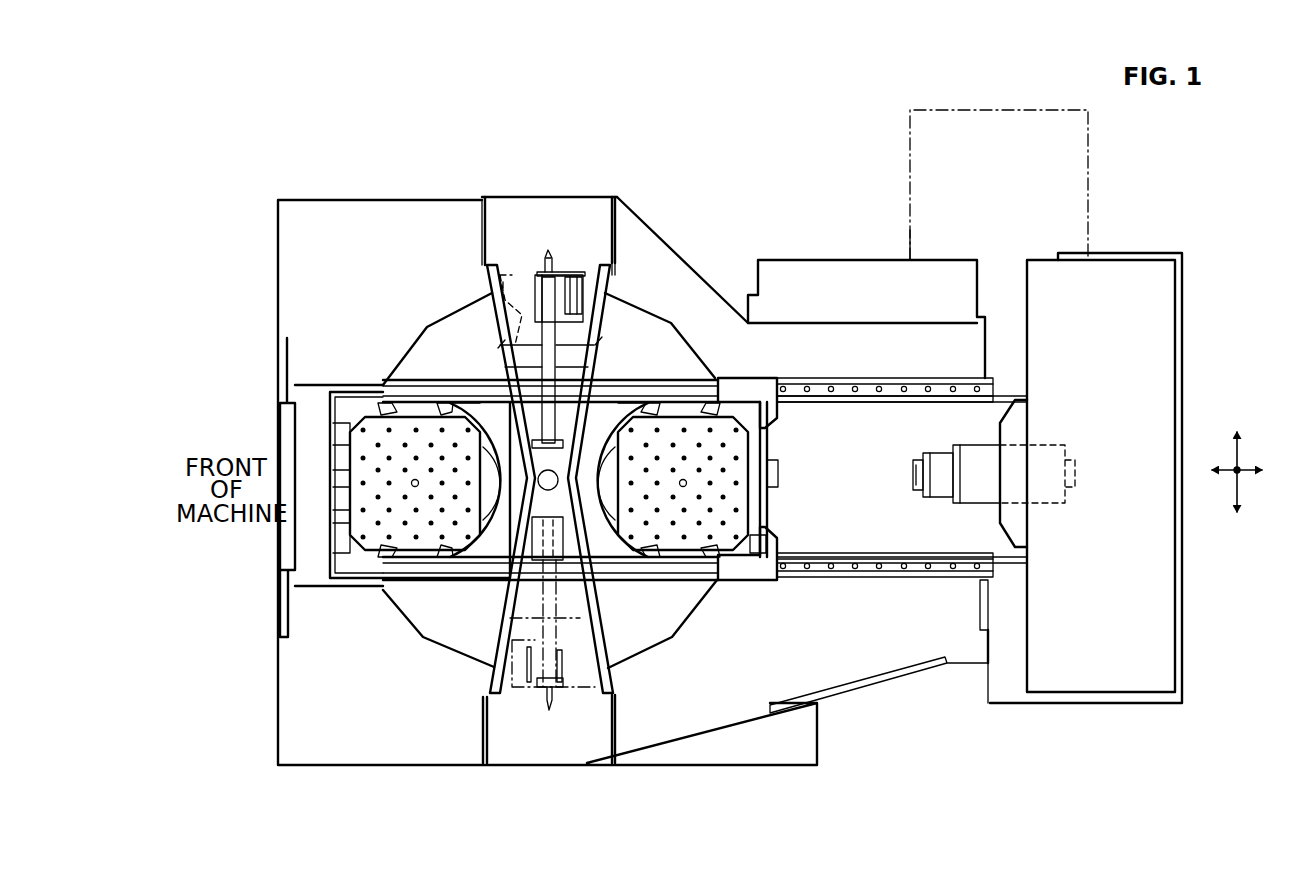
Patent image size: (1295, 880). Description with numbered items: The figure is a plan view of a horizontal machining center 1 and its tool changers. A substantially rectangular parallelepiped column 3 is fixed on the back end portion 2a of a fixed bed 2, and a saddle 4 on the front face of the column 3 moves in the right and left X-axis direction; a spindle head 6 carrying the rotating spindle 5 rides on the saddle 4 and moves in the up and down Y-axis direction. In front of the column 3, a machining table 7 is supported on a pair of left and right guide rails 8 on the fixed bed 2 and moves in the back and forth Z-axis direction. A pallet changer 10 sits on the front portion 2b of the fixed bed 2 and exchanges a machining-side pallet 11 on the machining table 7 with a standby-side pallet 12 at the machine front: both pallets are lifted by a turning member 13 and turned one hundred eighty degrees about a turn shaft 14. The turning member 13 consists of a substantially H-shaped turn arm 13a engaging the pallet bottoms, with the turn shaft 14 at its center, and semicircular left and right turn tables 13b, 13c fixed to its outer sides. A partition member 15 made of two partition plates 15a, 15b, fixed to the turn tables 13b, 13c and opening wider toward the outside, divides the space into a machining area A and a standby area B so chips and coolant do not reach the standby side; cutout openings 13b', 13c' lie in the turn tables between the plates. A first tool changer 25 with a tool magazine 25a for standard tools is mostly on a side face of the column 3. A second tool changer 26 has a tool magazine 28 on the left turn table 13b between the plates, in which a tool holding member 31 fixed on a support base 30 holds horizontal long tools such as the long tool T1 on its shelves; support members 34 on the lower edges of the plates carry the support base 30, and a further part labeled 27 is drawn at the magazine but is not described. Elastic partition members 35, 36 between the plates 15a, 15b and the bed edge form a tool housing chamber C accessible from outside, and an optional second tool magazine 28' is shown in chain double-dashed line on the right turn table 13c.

The horizontal machining center 1 is at (594, 167).
The fixed bed 2 is at (418, 186).
The back end portion 2a is at (1012, 695).
The front portion 2b is at (458, 218).
The column 3 is at (1180, 358).
The saddle 4 is at (997, 523).
The spindle 5 is at (912, 466).
The spindle head 6 is at (974, 445).
The machining table 7 is at (773, 530).
The guide rails 8 is at (853, 376).
The pallet changer 10 is at (424, 318).
The machining-side pallet 11 is at (695, 540).
The standby-side pallet 12 is at (423, 543).
The turning member 13 is at (660, 650).
The turn arm 13a is at (677, 383).
The left turn table 13b is at (660, 329).
The cutout opening 13b' is at (642, 265).
The right turn table 13c is at (682, 627).
The cutout opening 13c' is at (440, 549).
The turn shaft 14 is at (552, 488).
The partition member 15 is at (488, 328).
The partition plate 15a is at (492, 337).
The partition plate 15b is at (600, 320).
The first tool changer 25 is at (906, 170).
The tool magazine 25a is at (907, 218).
The second tool changer 26 is at (523, 215).
The tool holder 27 is at (548, 270).
The tool magazine 28 is at (585, 264).
The tool magazine 28' is at (552, 663).
The support base 30 is at (506, 275).
The tool holding member 31 is at (533, 285).
The support members 34 is at (498, 348).
The partition member 35 is at (482, 218).
The partition member 36 is at (617, 203).
The machining area A is at (803, 415).
The standby area B is at (310, 393).
The tool housing chamber C is at (573, 208).
The long tool T1 is at (560, 363).
The X-axis X is at (1233, 492).
The Y-axis Y is at (1240, 462).
The Z-axis Z is at (1249, 478).